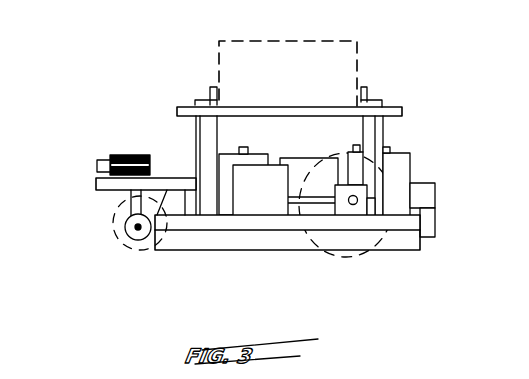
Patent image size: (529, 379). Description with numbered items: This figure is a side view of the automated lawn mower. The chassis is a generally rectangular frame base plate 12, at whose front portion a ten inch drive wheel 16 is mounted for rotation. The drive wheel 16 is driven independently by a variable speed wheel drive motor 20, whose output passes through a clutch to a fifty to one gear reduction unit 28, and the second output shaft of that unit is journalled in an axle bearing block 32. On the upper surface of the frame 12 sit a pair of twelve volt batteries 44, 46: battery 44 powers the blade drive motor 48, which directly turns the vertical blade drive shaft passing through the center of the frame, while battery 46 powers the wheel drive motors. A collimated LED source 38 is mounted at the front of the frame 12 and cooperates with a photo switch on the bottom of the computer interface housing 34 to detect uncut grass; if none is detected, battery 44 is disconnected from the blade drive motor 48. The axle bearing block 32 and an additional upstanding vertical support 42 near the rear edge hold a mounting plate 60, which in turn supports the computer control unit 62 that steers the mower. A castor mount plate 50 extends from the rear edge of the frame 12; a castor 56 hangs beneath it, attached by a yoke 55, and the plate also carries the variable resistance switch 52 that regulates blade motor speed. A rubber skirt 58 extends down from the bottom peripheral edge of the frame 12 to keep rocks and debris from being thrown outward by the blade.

The frame base plate 12 is at (220, 217).
The drive wheel 16 is at (395, 242).
The wheel drive motor 20 is at (262, 218).
The gear reduction unit 28 is at (343, 207).
The axle bearing block 32 is at (383, 128).
The computer interface housing 34 is at (432, 187).
The collimated LED source 38 is at (422, 212).
The upstanding vertical support 42 is at (196, 140).
The battery 44 is at (255, 154).
The battery 46 is at (407, 158).
The blade drive motor 48 is at (305, 153).
The castor mount plate 50 is at (96, 182).
The variable resistance switch 52 is at (133, 153).
The yoke 55 is at (140, 200).
The castor 56 is at (124, 220).
The rubber skirt 58 is at (153, 247).
The mounting plate 60 is at (297, 111).
The computer control unit 62 is at (220, 44).